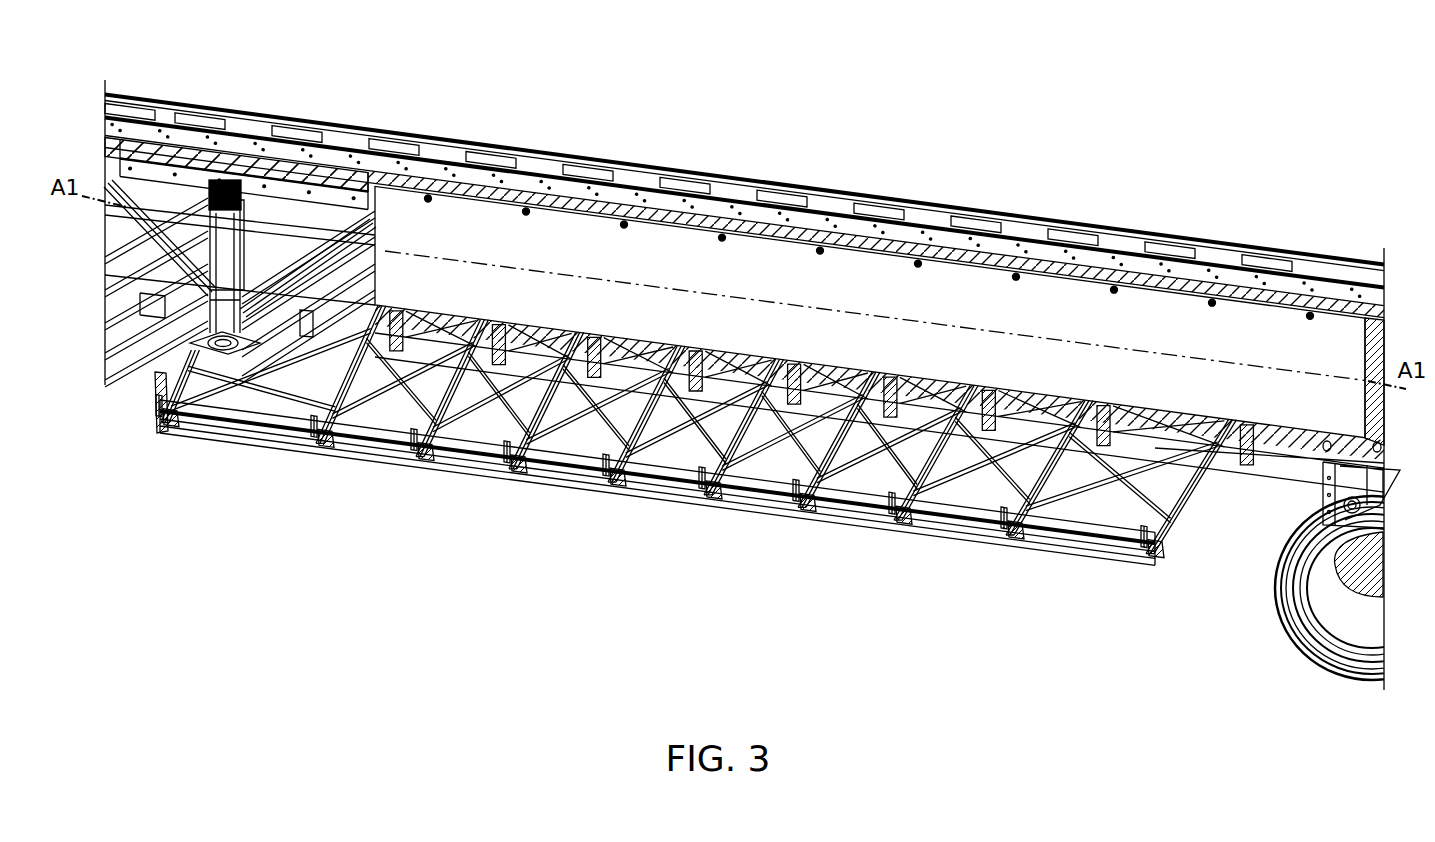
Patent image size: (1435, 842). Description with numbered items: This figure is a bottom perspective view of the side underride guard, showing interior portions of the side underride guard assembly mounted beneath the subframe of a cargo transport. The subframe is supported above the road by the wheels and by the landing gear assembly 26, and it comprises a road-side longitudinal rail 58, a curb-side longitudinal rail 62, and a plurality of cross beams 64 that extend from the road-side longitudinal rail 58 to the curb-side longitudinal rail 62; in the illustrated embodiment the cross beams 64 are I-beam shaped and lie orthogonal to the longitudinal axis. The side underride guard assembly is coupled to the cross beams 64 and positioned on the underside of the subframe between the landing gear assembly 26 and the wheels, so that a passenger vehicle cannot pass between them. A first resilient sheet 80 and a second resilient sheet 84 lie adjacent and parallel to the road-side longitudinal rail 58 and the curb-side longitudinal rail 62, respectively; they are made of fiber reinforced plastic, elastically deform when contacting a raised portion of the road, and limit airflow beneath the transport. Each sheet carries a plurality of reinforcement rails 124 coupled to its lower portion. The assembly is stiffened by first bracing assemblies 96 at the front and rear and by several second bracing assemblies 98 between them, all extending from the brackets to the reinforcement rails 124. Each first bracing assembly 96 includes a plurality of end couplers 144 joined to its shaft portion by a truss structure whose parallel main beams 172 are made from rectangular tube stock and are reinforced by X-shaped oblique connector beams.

The landing gear assembly 26 is at (223, 172).
The road-side longitudinal rail 58 is at (1032, 243).
The curb-side longitudinal rail 62 is at (1222, 457).
The cross beam 64 is at (325, 172).
The first resilient sheet 80 is at (1347, 360).
The second resilient sheet 84 is at (160, 397).
The first bracing assembly 96 is at (183, 376).
The second bracing assembly 98 is at (432, 405).
The reinforcement rail 124 is at (376, 446).
The end coupler 144 is at (160, 421).
The main beam 172 is at (310, 407).